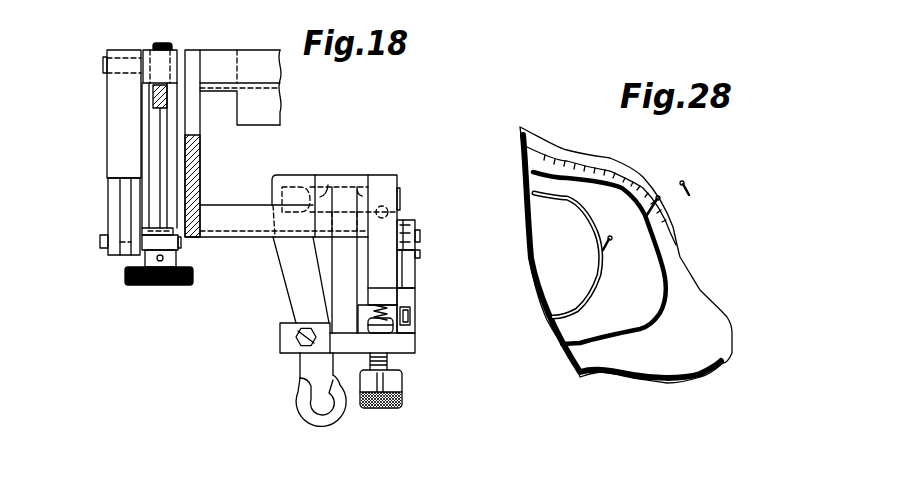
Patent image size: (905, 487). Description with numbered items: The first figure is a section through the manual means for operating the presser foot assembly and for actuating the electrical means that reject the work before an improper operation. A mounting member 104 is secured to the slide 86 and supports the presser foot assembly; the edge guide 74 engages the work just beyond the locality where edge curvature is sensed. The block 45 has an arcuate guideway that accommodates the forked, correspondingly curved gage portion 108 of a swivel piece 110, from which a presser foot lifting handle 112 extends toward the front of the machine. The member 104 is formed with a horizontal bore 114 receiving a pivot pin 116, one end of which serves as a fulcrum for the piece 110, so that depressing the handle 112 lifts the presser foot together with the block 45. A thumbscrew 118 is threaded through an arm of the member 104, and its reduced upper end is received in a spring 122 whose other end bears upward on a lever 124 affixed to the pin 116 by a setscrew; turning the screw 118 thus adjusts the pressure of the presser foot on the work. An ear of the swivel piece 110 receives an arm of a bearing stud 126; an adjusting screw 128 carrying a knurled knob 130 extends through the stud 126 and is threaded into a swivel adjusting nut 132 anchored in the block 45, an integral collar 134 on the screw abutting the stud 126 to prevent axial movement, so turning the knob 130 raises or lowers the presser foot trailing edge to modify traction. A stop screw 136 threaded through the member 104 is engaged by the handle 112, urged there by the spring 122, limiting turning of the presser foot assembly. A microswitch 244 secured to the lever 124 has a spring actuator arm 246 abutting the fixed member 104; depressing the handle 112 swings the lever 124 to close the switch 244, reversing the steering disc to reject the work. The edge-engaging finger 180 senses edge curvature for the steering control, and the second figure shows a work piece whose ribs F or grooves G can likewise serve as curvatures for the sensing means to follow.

In FIG. 18, the block 45 is at (120, 152).
In FIG. 18, the edge guide 74 is at (193, 55).
In FIG. 18, the slide 86 is at (220, 66).
In FIG. 18, the mounting member 104 is at (212, 205).
In FIG. 18, the gage portion 108 is at (310, 200).
In FIG. 18, the swivel piece 110 is at (243, 195).
In FIG. 18, the presser foot lifting handle 112 is at (320, 405).
In FIG. 18, the horizontal bore 114 is at (343, 168).
In FIG. 18, the pivot pin 116 is at (395, 205).
In FIG. 18, the thumbscrew 118 is at (401, 400).
In FIG. 18, the spring 122 is at (388, 328).
In FIG. 18, the lever 124 is at (397, 277).
In FIG. 18, the bearing stud 126 is at (100, 243).
In FIG. 18, the adjusting screw 128 is at (158, 118).
In FIG. 18, the knurled knob 130 is at (153, 282).
In FIG. 18, the swivel adjusting nut 132 is at (150, 58).
In FIG. 18, the collar 134 is at (163, 230).
In FIG. 18, the stop screw 136 is at (298, 336).
In FIG. 18, the microswitch 244 is at (405, 270).
In FIG. 18, the spring actuator arm 246 is at (405, 288).
In FIG. 28, the edge-engaging finger 180 is at (681, 193).
In FIG. 28, the grooves G is at (596, 292).
In FIG. 28, the ribs F is at (638, 328).